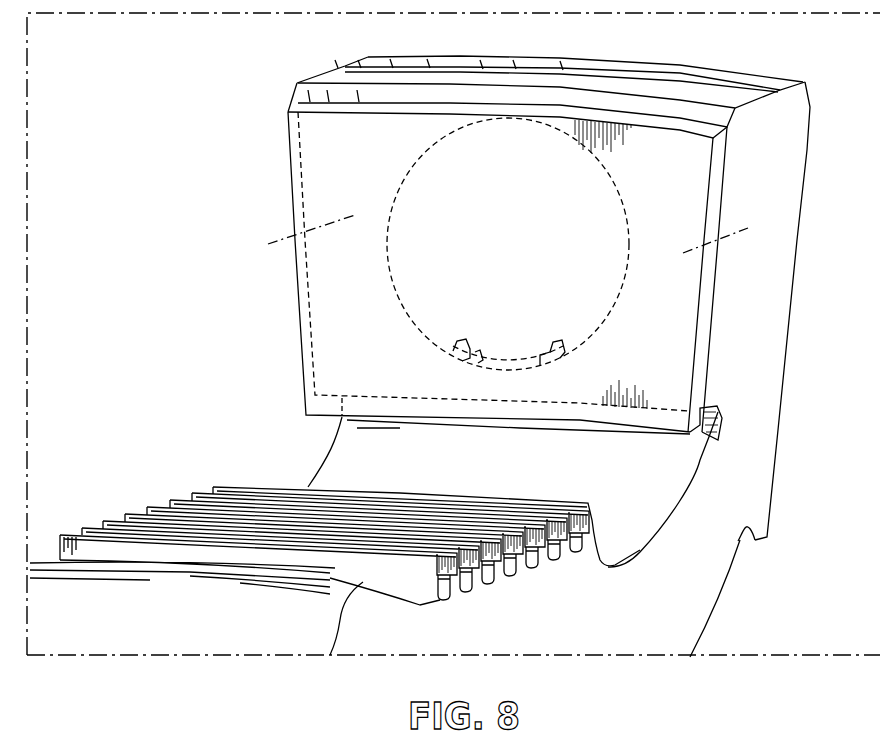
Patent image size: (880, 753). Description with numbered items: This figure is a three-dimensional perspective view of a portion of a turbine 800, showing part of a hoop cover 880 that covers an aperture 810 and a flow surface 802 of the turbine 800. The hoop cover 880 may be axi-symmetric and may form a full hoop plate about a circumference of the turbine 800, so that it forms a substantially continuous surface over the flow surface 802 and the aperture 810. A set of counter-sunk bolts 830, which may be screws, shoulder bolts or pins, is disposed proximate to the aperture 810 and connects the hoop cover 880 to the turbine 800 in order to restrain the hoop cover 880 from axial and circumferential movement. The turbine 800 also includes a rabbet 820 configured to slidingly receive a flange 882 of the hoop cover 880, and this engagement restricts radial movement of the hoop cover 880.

The turbine 800 is at (780, 178).
The flow surface 802 is at (684, 289).
The aperture 810 is at (544, 195).
The rabbet 820 is at (730, 415).
The counter-sunk bolts 830 is at (278, 244).
The hoop cover 880 is at (288, 157).
The flange 882 is at (700, 458).